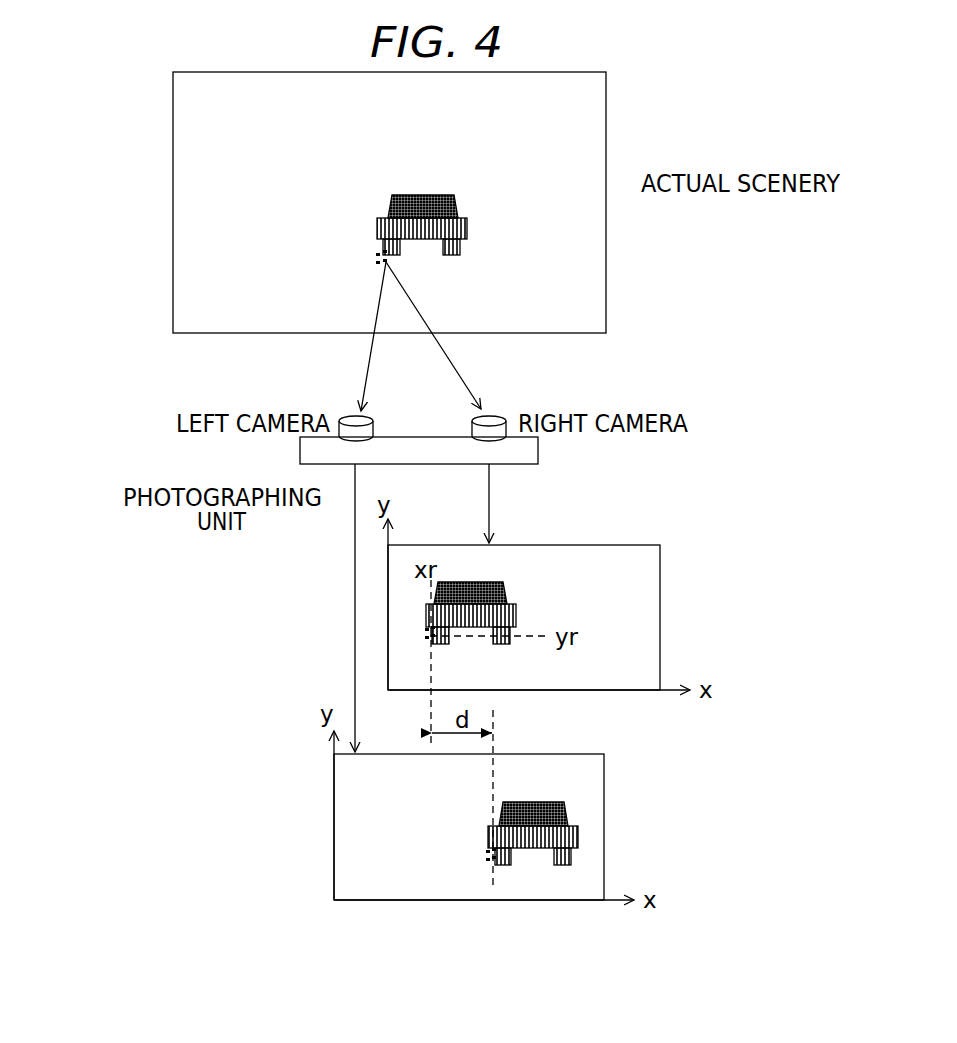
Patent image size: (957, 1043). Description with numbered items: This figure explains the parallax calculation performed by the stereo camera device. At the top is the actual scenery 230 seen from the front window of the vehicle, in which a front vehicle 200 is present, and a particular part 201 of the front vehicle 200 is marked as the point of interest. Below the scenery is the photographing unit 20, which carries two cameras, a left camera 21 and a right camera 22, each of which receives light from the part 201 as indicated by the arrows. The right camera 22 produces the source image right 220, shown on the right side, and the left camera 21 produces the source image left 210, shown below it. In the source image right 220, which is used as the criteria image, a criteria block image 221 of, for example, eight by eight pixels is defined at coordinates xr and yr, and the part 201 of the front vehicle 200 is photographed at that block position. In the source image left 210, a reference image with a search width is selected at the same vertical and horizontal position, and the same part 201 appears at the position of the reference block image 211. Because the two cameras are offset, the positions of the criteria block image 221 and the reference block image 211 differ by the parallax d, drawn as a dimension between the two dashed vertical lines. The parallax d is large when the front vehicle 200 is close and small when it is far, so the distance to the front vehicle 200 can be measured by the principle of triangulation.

The actual scenery 230 is at (606, 171).
The front vehicle 200 is at (405, 195).
The part of the front vehicle 201 is at (390, 260).
The photographing unit 20 is at (300, 447).
The left camera 21 is at (370, 421).
The right camera 22 is at (504, 419).
The source image right 220 is at (520, 545).
The criteria block image 221 is at (433, 640).
The source image left 210 is at (548, 901).
The reference block image 211 is at (490, 848).